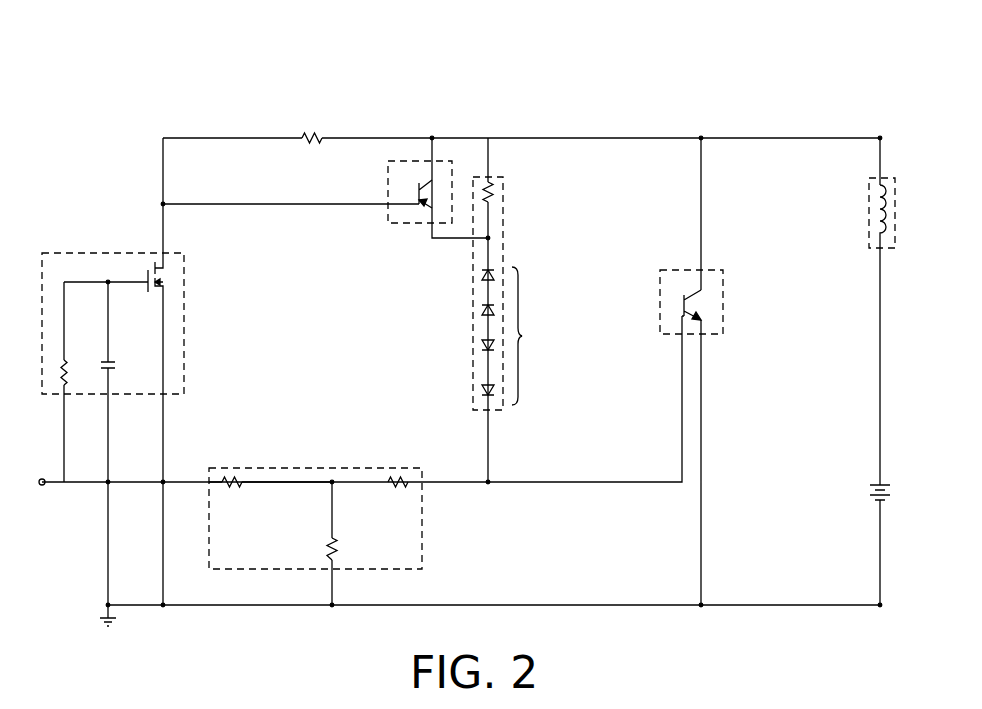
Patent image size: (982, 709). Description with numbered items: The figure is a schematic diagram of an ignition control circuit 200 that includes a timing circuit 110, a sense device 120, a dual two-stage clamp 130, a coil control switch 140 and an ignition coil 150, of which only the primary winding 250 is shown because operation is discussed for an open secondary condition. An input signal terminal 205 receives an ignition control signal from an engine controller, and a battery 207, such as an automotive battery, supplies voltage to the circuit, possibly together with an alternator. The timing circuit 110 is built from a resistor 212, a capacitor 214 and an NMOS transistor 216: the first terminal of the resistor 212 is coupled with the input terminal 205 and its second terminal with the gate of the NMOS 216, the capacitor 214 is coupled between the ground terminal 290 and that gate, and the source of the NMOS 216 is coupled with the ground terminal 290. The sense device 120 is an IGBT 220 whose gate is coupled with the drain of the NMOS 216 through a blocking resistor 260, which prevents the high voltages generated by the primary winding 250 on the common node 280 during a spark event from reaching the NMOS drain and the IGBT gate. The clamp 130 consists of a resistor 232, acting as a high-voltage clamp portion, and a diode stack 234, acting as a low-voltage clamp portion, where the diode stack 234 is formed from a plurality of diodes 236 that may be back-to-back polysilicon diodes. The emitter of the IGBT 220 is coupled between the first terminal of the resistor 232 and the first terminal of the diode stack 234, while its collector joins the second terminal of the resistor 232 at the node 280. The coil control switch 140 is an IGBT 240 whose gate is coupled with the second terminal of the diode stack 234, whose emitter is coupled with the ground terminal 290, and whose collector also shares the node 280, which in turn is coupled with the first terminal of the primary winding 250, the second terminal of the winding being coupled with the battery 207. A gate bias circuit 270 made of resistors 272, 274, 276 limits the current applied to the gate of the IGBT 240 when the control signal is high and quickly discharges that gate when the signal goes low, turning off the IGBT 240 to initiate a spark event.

The ignition control circuit 200 is at (703, 88).
The timing circuit 110 is at (113, 252).
The sense device 120 is at (404, 224).
The dual (two-stage) clamp 130 is at (474, 412).
The coil control switch 140 is at (663, 336).
The ignition coil 150 is at (871, 250).
The input signal terminal 205 is at (43, 485).
The battery 207 is at (872, 505).
The resistor 212 is at (68, 376).
The capacitor 214 is at (113, 365).
The NMOS transistor 216 is at (172, 282).
The IGBT 220 is at (418, 183).
The resistor 232 is at (492, 194).
The diode stack 234 is at (521, 336).
The diodes 236 is at (478, 275).
The IGBT 240 is at (684, 297).
The primary winding 250 is at (873, 188).
The blocking resistor 260 is at (305, 133).
The gate bias circuit 270 is at (256, 563).
The resistor 272 is at (232, 478).
The resistor 274 is at (393, 478).
The resistor 276 is at (345, 540).
The common node 280 is at (701, 136).
The ground terminal 290 is at (701, 606).